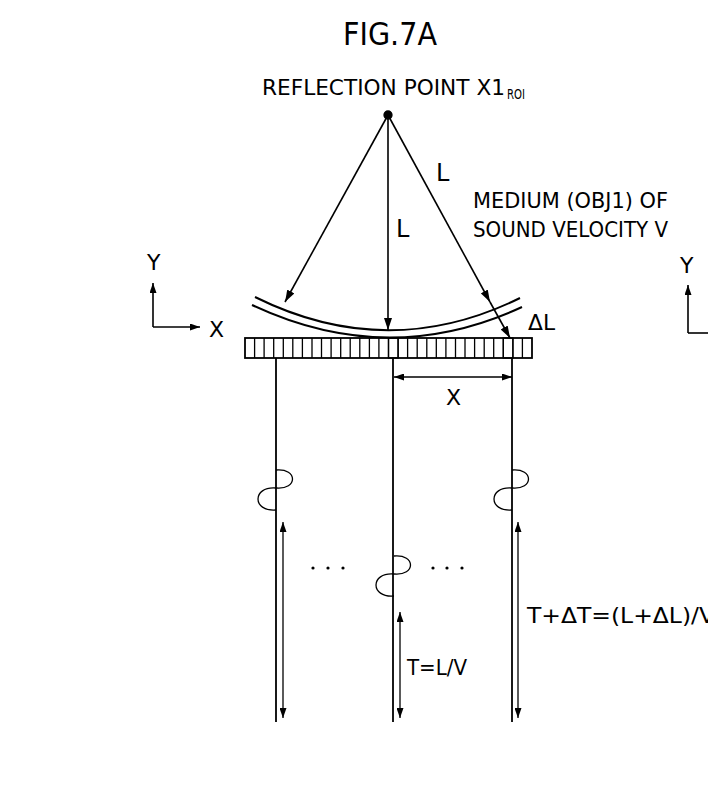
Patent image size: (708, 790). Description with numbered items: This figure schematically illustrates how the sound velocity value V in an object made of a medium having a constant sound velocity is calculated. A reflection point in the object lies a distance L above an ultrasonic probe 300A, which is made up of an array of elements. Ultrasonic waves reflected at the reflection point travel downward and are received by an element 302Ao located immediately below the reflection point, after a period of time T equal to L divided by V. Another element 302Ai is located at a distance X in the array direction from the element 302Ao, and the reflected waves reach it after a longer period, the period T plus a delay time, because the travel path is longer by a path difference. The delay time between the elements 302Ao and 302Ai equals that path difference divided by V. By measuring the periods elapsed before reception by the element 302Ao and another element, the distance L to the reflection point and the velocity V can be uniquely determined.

The ultrasonic probe 300A is at (227, 363).
The element located immediately below the reflection point 302Ao is at (388, 352).
The element located at a distance X from the element 302Ao 302Ai is at (514, 358).